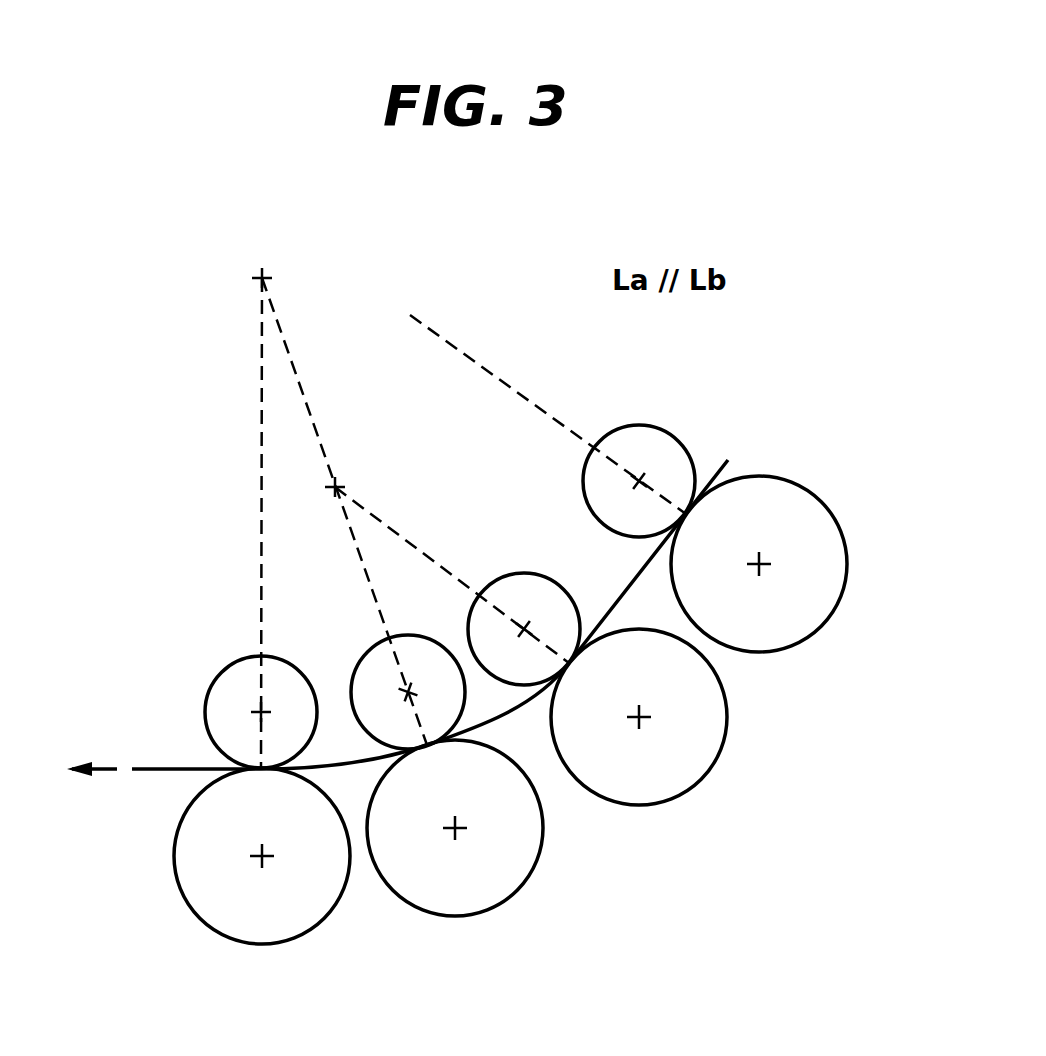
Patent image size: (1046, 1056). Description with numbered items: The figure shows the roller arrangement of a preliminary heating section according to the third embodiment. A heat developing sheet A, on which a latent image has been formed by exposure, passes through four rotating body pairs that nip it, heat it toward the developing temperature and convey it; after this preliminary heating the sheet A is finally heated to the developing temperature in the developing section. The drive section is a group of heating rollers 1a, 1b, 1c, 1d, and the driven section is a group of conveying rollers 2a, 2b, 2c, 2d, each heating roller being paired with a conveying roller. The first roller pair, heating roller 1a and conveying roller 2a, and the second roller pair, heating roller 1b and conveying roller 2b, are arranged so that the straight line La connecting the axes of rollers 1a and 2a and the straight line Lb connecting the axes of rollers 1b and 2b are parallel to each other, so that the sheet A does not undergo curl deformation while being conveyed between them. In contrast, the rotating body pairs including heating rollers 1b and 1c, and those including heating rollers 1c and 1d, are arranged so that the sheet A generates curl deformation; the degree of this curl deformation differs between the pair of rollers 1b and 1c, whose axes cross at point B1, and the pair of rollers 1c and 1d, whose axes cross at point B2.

The heating roller 1a is at (793, 647).
The heating roller 1b is at (650, 805).
The heating roller 1c is at (457, 913).
The heating roller 1d is at (262, 941).
The conveying roller 2a is at (650, 425).
The conveying roller 2b is at (522, 573).
The conveying roller 2c is at (374, 647).
The conveying roller 2d is at (233, 665).
The heat developing sheet A is at (635, 578).
The straight line connecting the axes of the first roller pair La is at (510, 387).
The straight line connecting the axes of the second roller pair Lb is at (425, 555).
The cross point of the axes of rotating body pairs 1b and 1c B1 is at (338, 487).
The cross point of the axes of rotating body pairs 1c and 1d B2 is at (262, 278).